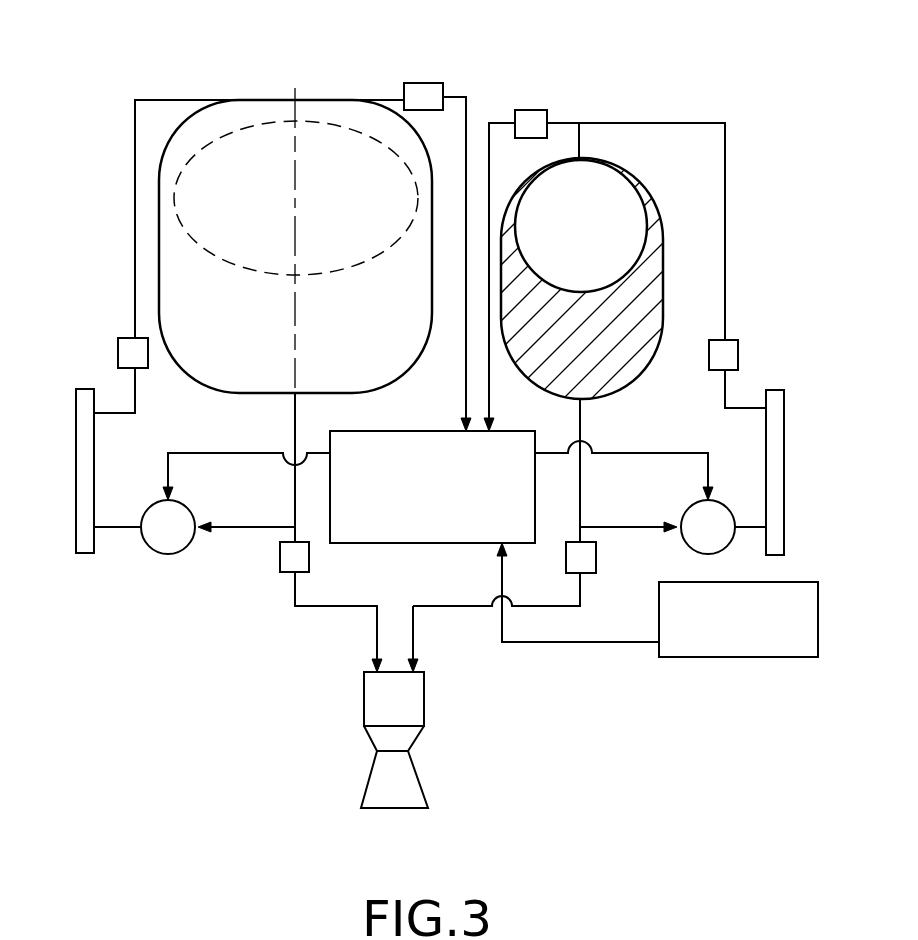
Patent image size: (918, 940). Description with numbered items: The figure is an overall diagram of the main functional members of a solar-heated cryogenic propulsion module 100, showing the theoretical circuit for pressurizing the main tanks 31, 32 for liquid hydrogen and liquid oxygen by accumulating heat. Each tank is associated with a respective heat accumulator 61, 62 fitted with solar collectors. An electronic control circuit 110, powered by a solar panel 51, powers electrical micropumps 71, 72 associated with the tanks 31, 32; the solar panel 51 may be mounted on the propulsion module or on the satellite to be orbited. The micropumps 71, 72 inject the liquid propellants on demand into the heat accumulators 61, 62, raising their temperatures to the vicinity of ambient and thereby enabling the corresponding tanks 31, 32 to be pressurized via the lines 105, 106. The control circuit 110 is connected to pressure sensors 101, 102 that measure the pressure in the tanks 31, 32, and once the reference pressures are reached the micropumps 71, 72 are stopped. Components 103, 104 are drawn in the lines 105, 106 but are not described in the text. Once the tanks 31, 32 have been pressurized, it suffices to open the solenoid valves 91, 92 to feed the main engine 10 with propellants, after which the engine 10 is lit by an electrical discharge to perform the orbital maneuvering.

The propulsion module 100 is at (138, 665).
The main tank for liquid hydrogen 31 is at (268, 100).
The main tank for liquid oxygen 32 is at (638, 178).
The pressure sensor 101 is at (422, 83).
The pressure sensor 102 is at (528, 110).
The first valve 103 is at (120, 352).
The second valve 104 is at (738, 355).
The pressurization line 105 is at (135, 165).
The pressurization line 106 is at (725, 210).
The heat accumulator 61 is at (78, 476).
The heat accumulator 62 is at (782, 453).
The electronic control circuit 110 is at (422, 452).
The electrical micropump 71 is at (168, 545).
The electrical micropump 72 is at (692, 510).
The solenoid valve 91 is at (288, 558).
The solenoid valve 92 is at (590, 557).
The solar panel 51 is at (810, 627).
The main engine 10 is at (410, 790).